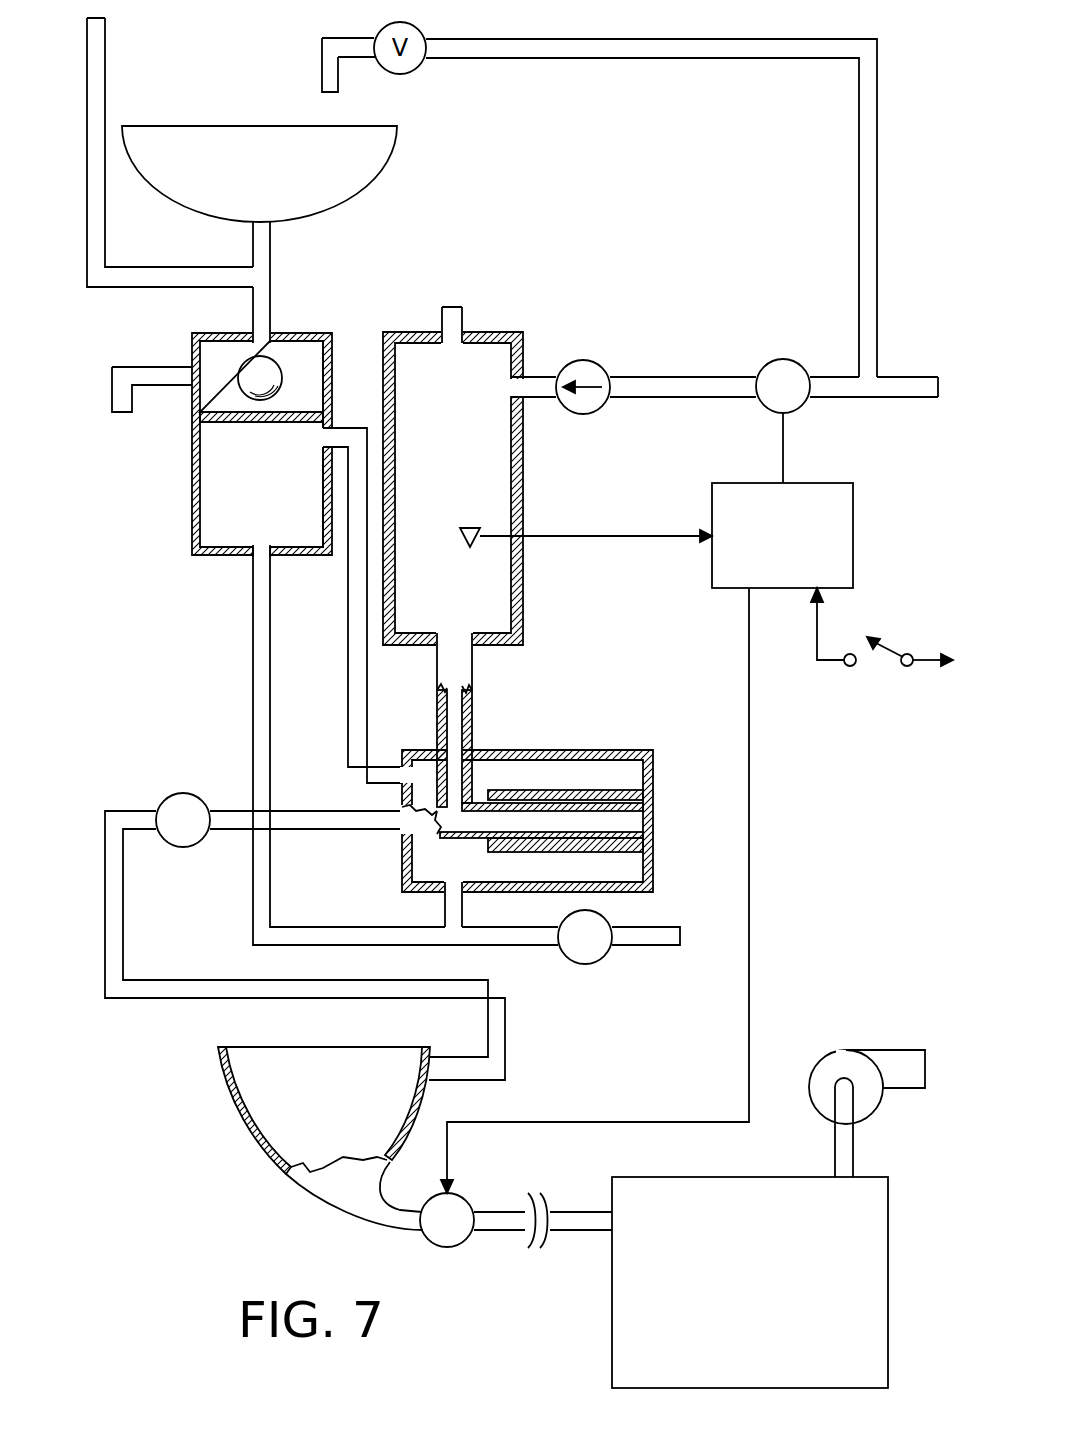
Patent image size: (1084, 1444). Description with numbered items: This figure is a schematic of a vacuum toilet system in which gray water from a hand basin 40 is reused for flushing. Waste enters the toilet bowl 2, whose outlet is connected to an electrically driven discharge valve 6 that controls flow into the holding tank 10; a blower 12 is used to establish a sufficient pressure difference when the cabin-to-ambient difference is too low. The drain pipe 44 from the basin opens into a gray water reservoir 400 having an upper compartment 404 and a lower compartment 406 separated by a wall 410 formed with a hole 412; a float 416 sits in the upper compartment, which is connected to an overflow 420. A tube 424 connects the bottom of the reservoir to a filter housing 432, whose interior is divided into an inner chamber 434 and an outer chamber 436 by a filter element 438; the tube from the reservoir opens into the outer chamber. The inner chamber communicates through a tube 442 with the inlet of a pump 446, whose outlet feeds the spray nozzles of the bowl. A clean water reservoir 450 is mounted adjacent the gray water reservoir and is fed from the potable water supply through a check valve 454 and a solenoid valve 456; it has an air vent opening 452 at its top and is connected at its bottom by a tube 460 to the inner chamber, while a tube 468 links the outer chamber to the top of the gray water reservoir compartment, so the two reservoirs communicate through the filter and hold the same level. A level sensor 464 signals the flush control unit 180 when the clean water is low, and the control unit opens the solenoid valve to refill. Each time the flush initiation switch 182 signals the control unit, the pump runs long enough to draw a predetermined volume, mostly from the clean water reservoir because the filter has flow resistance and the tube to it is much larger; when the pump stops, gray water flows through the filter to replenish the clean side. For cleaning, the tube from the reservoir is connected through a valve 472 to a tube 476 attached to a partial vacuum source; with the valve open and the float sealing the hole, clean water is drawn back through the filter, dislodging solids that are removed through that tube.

The toilet bowl 2 is at (248, 1133).
The discharge valve 6 is at (467, 1243).
The holding tank 10 is at (612, 1313).
The blower 12 is at (898, 1050).
The hand basin 40 is at (360, 191).
The drain pipe 44 is at (270, 283).
The flush control unit 180 is at (853, 530).
The flush initiation switch 182 is at (890, 660).
The gray water reservoir 400 is at (192, 535).
The upper compartment 404 is at (220, 357).
The lower compartment 406 is at (220, 488).
The wall 410 is at (232, 422).
The hole 412 is at (267, 422).
The float 416 is at (280, 372).
The overflow 420 is at (157, 367).
The tube 424 is at (252, 690).
The filter housing 432 is at (623, 750).
The inner chamber 434 is at (628, 827).
The outer chamber 436 is at (628, 868).
The filter element 438 is at (623, 790).
The tube 442 is at (322, 810).
The pump 446 is at (178, 793).
The clean water reservoir 450 is at (523, 465).
The air vent opening 452 is at (462, 318).
The check valve 454 is at (603, 370).
The solenoid valve 456 is at (780, 360).
The tube 460 is at (473, 720).
The level sensor 464 is at (485, 528).
The tube 468 is at (348, 670).
The valve 472 is at (605, 958).
The tube 476 is at (645, 948).